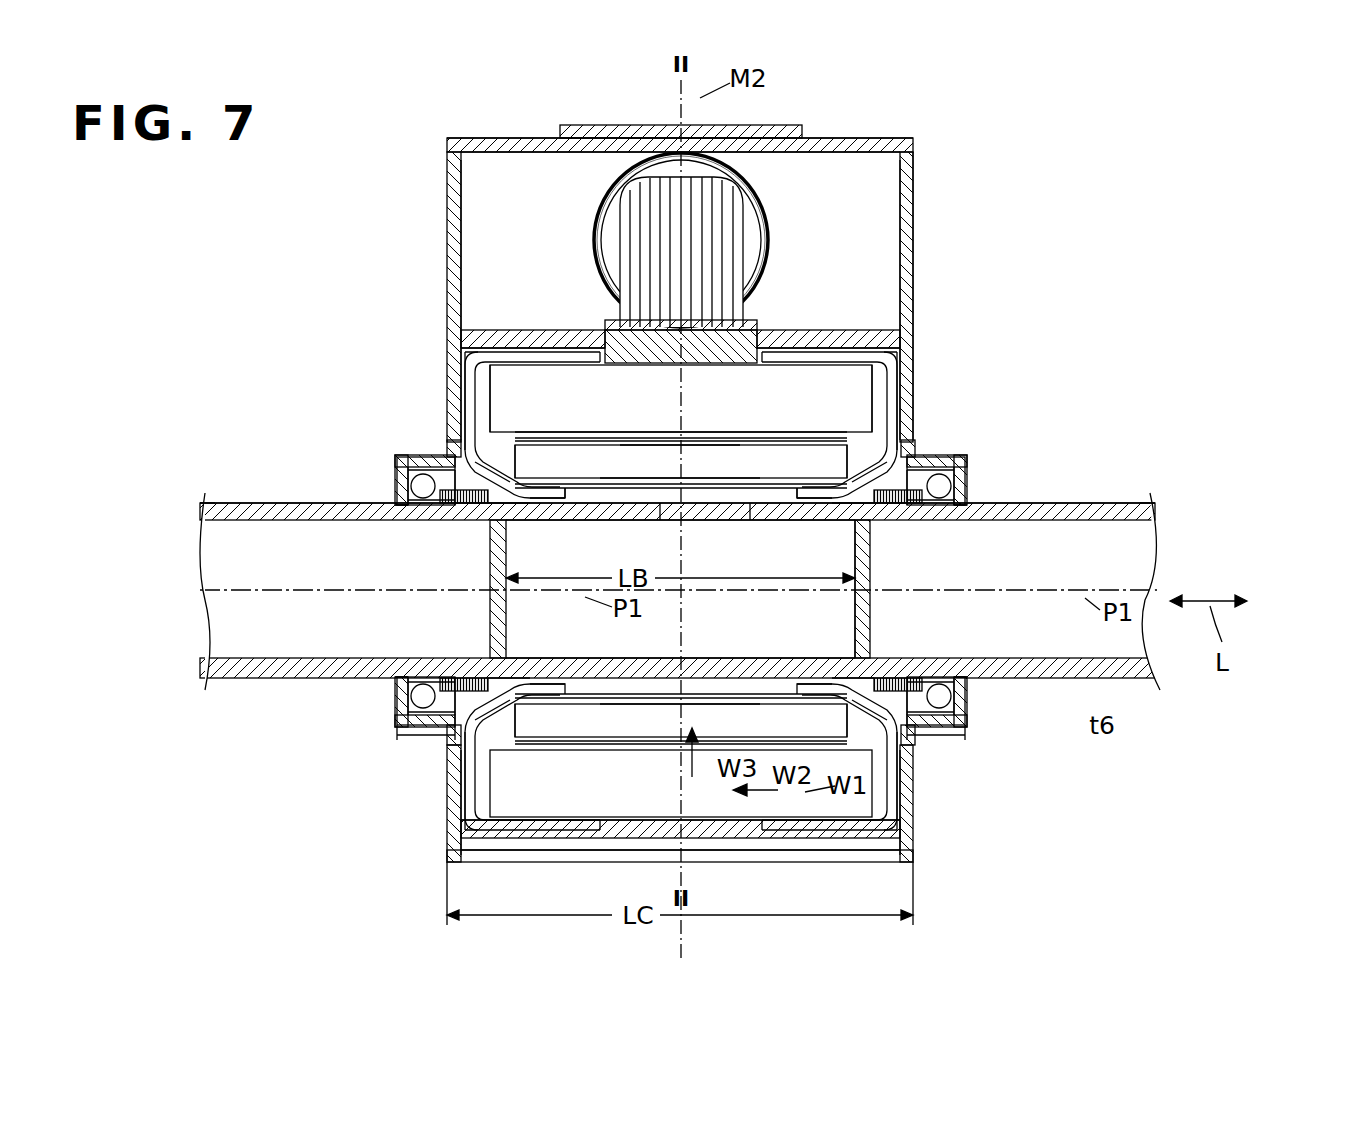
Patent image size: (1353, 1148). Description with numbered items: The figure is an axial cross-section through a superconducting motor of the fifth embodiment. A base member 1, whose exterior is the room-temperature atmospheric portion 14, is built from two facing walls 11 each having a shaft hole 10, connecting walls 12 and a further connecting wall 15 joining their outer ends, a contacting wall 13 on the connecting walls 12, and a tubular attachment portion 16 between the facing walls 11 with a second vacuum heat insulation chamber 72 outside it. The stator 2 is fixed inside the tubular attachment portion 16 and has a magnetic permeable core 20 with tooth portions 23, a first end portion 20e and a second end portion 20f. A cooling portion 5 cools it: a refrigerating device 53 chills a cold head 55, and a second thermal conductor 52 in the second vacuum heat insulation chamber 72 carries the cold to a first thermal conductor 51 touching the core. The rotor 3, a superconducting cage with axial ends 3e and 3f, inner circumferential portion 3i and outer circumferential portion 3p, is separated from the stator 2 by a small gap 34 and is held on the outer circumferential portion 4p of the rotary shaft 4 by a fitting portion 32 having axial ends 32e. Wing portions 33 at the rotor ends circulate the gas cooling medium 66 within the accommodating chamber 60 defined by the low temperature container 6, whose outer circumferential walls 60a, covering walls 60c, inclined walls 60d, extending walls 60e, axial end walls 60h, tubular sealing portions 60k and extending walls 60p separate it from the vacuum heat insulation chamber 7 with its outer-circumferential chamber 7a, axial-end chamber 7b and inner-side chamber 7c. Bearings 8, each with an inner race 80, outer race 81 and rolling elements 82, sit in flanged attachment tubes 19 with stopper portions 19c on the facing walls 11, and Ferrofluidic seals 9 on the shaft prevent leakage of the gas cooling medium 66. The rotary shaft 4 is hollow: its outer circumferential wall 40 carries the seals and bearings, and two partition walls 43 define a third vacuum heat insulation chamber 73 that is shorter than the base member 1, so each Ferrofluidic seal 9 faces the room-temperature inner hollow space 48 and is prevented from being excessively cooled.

The base member 1 is at (928, 163).
The stator 2 is at (462, 262).
The rotor 3 is at (495, 330).
The first axial end of the rotor 3e is at (794, 465).
The second axial end of the rotor 3f is at (538, 462).
The inner circumferential portion of the rotor 3i is at (695, 506).
The outer circumferential portion of the rotor 3p is at (638, 440).
The rotary shaft 4 is at (203, 556).
The outer circumferential portion of the rotary shaft 4p is at (290, 500).
The cooling portion 5 is at (681, 240).
The low temperature container 6 is at (915, 330).
The vacuum heat insulation chamber 7 is at (450, 450).
The outer-circumferential heat insulation chamber 7a is at (555, 345).
The axial-end heat insulation chamber 7b is at (455, 396).
The inner-side heat insulation chamber 7c is at (540, 680).
The bearing 8 is at (960, 498).
The Ferrofluidic seal 9 is at (428, 506).
The shaft hole 10 is at (395, 491).
The facing wall 11 is at (452, 202).
The connecting wall 12 is at (470, 140).
The contacting wall 13 is at (776, 128).
The atmospheric portion 14 is at (1332, 488).
The connecting wall 15 is at (706, 864).
The tubular attachment portion 16 is at (910, 310).
The flanged attachment tube 19 is at (962, 460).
The stopper portion 19c is at (400, 735).
The magnetic permeable core 20 is at (572, 370).
The first end portion of the magnetic permeable core 20e is at (862, 400).
The second end portion of the magnetic permeable core 20f is at (524, 402).
The tooth portion 23 is at (700, 384).
The fitting portion 32 is at (712, 522).
The axial end of the fitting portion 32e is at (660, 506).
The wing portion 33 is at (520, 438).
The gap 34 is at (706, 441).
The outer circumferential wall of the rotary shaft 40 is at (205, 510).
The partition wall 43 is at (493, 600).
The inner hollow space of the rotary shaft 48 is at (442, 577).
The first thermal conductor 51 is at (615, 345).
The second thermal conductor 52 is at (728, 256).
The refrigerating device 53 is at (880, 140).
The cold head 55 is at (681, 240).
The accommodating chamber 60 is at (893, 395).
The outer circumferential wall 60a is at (500, 350).
The covering wall 60c is at (465, 372).
The inclined wall 60d is at (478, 460).
The extending wall 60e is at (545, 506).
The axial end wall 60h is at (595, 506).
The tubular sealing portion 60k is at (488, 506).
The extending wall 60p is at (465, 356).
The gas cooling medium 66 is at (915, 370).
The second vacuum heat insulation chamber 72 is at (547, 200).
The third vacuum heat insulation chamber 73 is at (870, 598).
The inner race 80 is at (420, 676).
The outer race 81 is at (395, 722).
The rolling element 82 is at (440, 689).